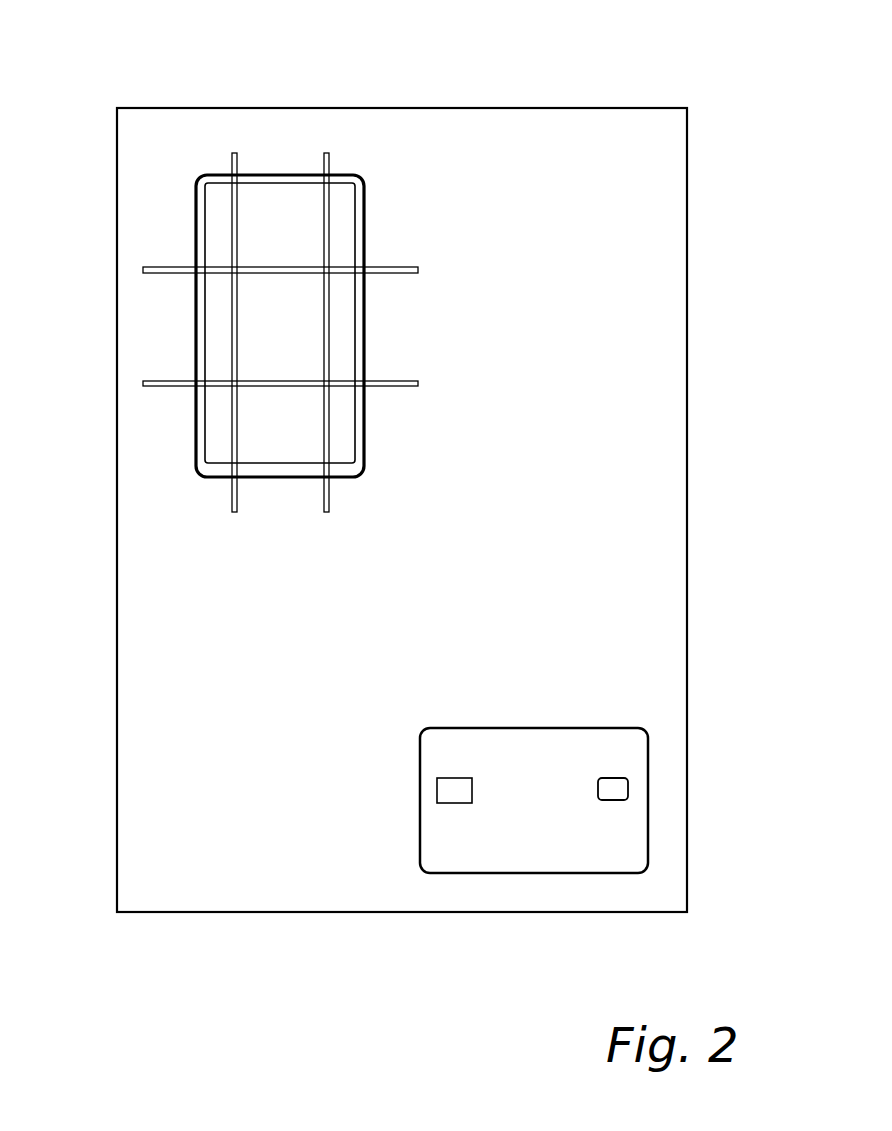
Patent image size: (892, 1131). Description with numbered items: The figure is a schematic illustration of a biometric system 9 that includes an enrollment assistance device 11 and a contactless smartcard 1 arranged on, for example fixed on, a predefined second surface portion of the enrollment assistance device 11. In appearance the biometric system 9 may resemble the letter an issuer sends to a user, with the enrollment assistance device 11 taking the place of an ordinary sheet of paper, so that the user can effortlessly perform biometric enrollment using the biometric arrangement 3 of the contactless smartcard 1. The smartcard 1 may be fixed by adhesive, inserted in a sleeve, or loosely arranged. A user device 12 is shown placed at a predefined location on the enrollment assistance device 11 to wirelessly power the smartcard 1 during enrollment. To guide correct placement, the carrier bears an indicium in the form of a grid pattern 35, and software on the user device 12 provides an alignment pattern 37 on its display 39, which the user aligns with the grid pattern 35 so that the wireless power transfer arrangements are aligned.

The biometric system 9 is at (740, 78).
The enrollment assistance device 11 is at (613, 523).
The user device 12 is at (200, 303).
The display 39 is at (220, 437).
The grid pattern 35 is at (330, 163).
The alignment pattern 37 is at (343, 267).
The contactless smartcard 1 is at (553, 730).
The biometric arrangement 3 is at (612, 777).